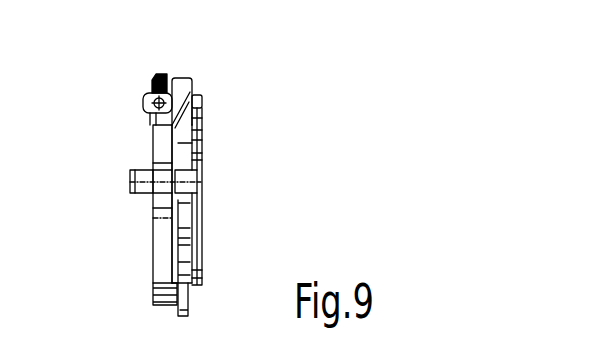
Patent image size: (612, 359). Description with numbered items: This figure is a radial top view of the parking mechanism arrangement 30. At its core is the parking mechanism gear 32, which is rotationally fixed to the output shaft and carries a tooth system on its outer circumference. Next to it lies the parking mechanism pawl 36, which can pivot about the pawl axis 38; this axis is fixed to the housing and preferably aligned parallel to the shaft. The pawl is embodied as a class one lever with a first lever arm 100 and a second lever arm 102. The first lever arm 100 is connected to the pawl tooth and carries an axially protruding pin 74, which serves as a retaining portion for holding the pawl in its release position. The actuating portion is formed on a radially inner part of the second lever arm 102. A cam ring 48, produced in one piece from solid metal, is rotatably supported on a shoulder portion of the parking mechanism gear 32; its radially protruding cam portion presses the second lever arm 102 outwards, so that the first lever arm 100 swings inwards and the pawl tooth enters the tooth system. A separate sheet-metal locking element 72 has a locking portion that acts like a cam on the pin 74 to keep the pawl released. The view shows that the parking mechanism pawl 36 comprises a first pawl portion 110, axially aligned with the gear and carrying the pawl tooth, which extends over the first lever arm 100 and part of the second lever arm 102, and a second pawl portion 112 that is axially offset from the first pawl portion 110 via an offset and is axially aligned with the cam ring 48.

The parking mechanism arrangement 30 is at (263, 117).
The second lever arm 102 is at (150, 127).
The second pawl portion 112 is at (182, 90).
The first pawl portion 110 is at (168, 150).
The pin 74 is at (197, 250).
The pawl axis 38 is at (141, 172).
The parking mechanism pawl 36 is at (153, 224).
The first lever arm 100 is at (165, 252).
The parking mechanism gear 32 is at (166, 305).
The locking element 72 is at (183, 316).
The cam ring 48 is at (195, 287).